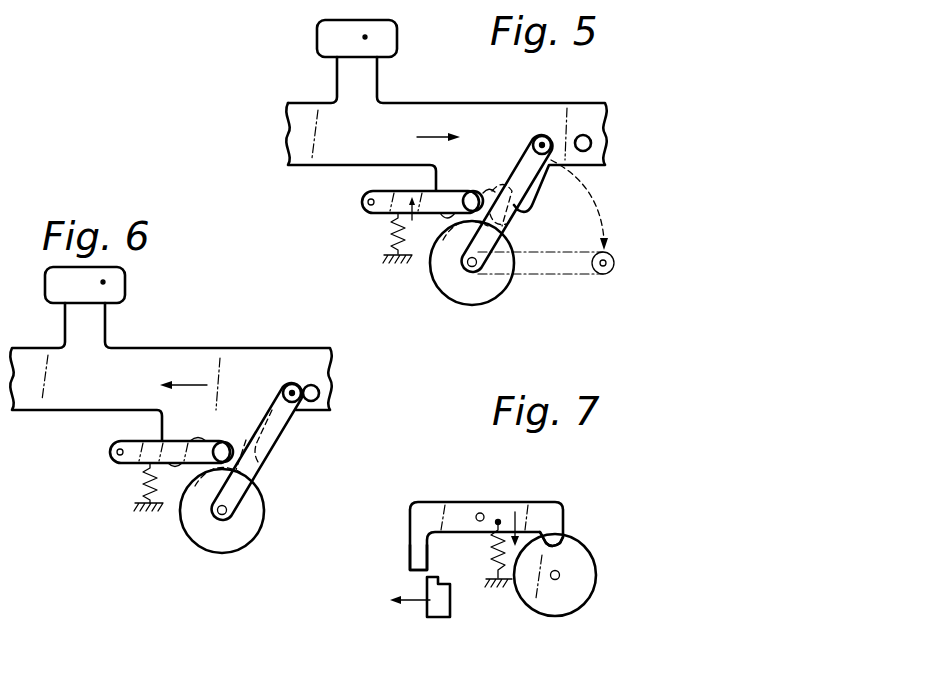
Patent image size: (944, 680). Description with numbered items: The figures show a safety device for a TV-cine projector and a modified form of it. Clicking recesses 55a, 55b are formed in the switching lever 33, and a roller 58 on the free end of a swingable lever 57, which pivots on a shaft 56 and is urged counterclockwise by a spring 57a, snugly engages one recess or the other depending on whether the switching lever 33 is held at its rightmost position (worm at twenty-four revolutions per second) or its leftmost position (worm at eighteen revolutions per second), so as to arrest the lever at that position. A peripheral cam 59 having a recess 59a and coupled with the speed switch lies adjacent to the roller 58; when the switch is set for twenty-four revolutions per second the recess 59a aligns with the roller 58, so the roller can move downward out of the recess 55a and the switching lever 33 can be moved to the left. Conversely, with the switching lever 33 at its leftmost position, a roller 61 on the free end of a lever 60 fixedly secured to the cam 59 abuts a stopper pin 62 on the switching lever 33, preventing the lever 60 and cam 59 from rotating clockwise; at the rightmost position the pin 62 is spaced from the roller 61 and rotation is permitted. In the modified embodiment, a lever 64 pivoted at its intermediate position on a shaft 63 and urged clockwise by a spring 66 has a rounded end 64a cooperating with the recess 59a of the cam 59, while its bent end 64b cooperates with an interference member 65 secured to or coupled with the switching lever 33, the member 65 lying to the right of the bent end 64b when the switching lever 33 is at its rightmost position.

In FIG. 5, the switching lever 33 is at (432, 112).
In FIG. 6, the switching lever 33 is at (153, 362).
In FIG. 5, the clicking recess 55a is at (473, 191).
In FIG. 6, the clicking recess 55a is at (223, 427).
In FIG. 5, the clicking recess 55b is at (500, 183).
In FIG. 6, the clicking recess 55b is at (228, 442).
In FIG. 5, the shaft 56 is at (362, 214).
In FIG. 5, the swingable lever 57 is at (420, 205).
In FIG. 6, the swingable lever 57 is at (132, 456).
In FIG. 5, the spring 57a is at (383, 247).
In FIG. 5, the roller 58 is at (462, 193).
In FIG. 6, the roller 58 is at (197, 473).
In FIG. 5, the peripheral cam 59 is at (478, 293).
In FIG. 6, the peripheral cam 59 is at (228, 546).
In FIG. 7, the peripheral cam 59 is at (558, 610).
In FIG. 5, the recess 59a is at (460, 227).
In FIG. 6, the recess 59a is at (212, 481).
In FIG. 7, the recess 59a is at (592, 562).
In FIG. 5, the lever 60 is at (506, 217).
In FIG. 6, the lever 60 is at (278, 437).
In FIG. 5, the roller 61 is at (544, 136).
In FIG. 6, the roller 61 is at (292, 384).
In FIG. 5, the stopper pin 62 is at (591, 142).
In FIG. 6, the stopper pin 62 is at (319, 391).
In FIG. 7, the shaft 63 is at (480, 513).
In FIG. 7, the lever 64 is at (535, 515).
In FIG. 7, the rounded end 64a is at (548, 532).
In FIG. 7, the bent end 64b is at (410, 557).
In FIG. 7, the interference member 65 is at (438, 615).
In FIG. 7, the spring 66 is at (494, 552).